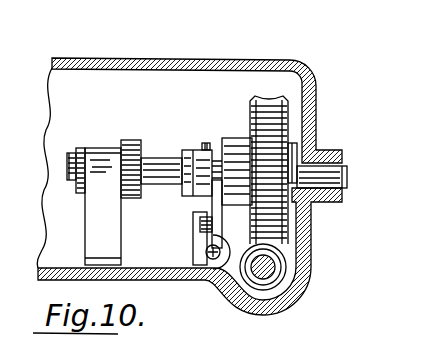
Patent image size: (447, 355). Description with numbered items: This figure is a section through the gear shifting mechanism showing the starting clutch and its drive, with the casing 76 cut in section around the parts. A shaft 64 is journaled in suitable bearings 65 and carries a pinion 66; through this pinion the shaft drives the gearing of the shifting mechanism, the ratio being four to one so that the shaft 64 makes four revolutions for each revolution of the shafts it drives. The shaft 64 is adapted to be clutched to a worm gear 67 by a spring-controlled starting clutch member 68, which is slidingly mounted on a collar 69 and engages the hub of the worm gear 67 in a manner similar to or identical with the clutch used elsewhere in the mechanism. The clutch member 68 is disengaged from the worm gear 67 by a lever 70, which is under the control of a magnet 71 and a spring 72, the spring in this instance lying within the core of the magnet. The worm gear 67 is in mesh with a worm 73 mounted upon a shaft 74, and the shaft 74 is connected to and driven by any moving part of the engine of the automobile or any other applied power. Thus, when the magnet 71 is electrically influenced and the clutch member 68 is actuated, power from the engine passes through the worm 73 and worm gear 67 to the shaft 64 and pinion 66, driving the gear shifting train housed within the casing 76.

The shaft 64 is at (158, 164).
The bearings 65 is at (103, 146).
The pinion 66 is at (137, 199).
The worm gear 67 is at (274, 99).
The starting clutch member 68 is at (209, 143).
The collar 69 is at (192, 196).
The lever 70 is at (210, 202).
The magnet 71 is at (203, 242).
The spring 72 is at (211, 259).
The worm 73 is at (282, 270).
The shaft 74 is at (265, 272).
The casing 76 is at (110, 60).